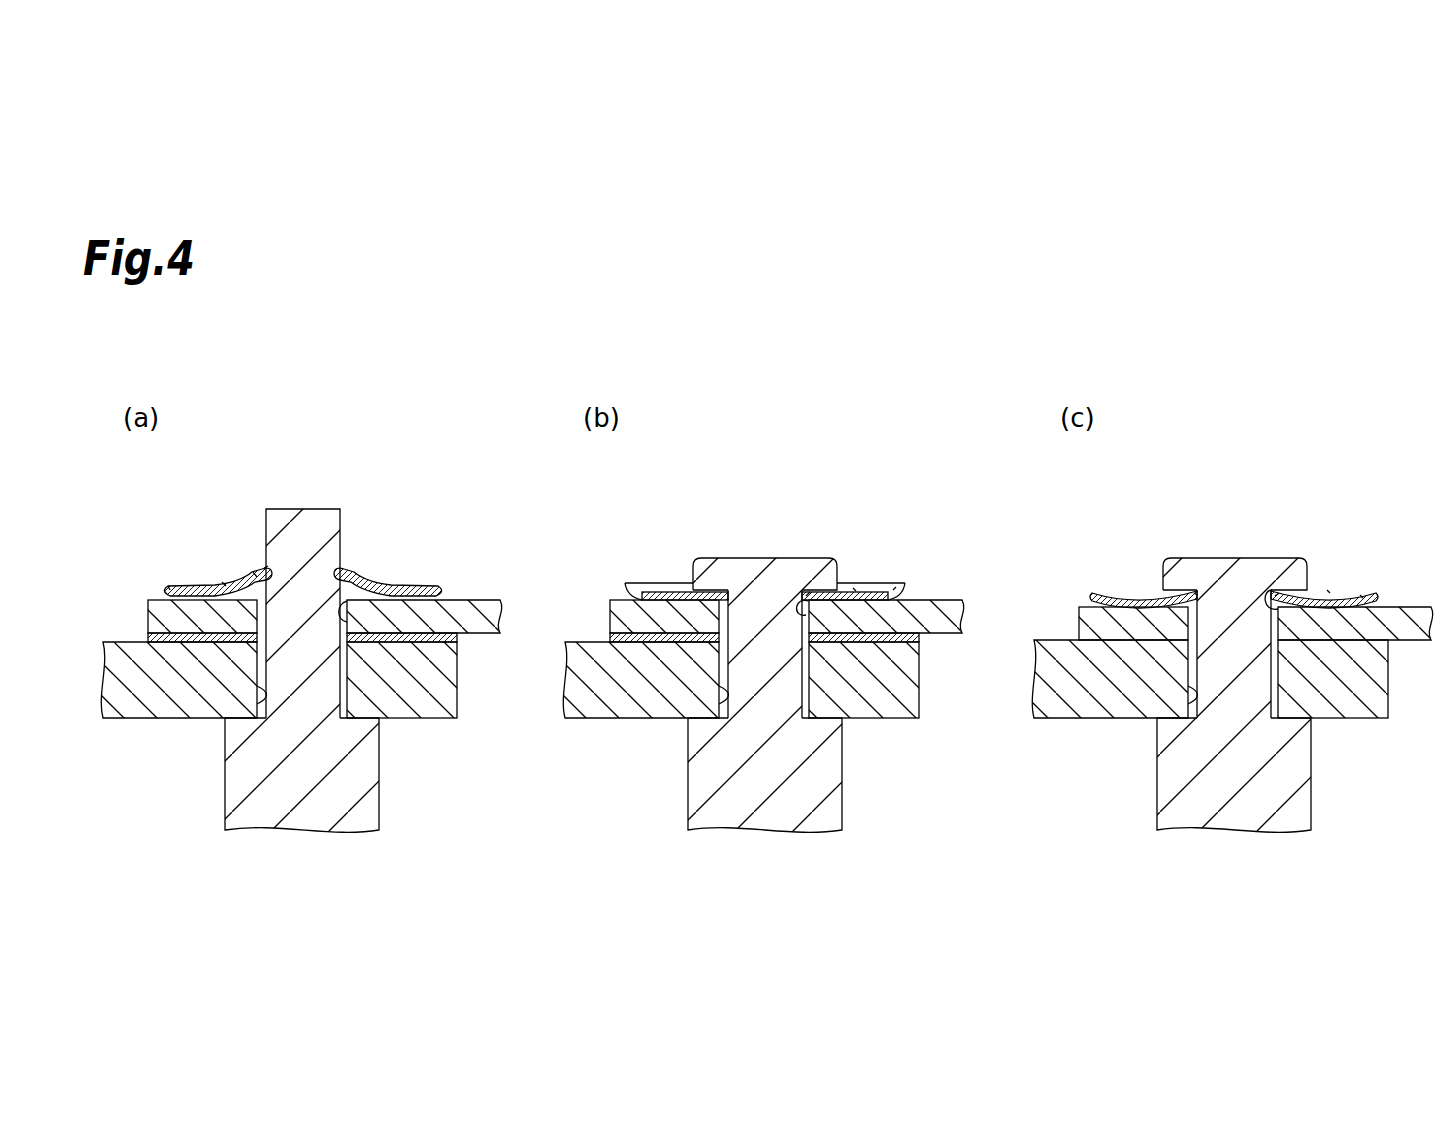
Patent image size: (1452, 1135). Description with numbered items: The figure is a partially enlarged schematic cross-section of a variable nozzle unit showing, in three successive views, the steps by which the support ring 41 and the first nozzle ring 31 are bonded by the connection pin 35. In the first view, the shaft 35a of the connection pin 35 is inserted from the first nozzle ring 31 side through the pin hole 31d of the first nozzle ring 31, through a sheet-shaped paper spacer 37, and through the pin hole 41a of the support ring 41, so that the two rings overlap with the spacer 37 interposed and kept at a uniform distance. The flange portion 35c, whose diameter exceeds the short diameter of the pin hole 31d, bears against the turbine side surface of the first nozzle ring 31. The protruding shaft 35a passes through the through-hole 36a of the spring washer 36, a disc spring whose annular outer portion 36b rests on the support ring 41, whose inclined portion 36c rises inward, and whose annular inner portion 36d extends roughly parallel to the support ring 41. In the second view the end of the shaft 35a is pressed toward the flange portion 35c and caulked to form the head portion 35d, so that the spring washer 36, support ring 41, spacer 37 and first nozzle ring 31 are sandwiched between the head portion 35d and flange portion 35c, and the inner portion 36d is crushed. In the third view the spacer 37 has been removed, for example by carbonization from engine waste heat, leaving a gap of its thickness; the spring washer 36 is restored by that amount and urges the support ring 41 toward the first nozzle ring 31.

The first nozzle ring 31 is at (140, 722).
The pin hole 31d is at (266, 702).
The connection pin 35 is at (223, 805).
The shaft 35a is at (327, 672).
The flange portion 35c is at (365, 772).
The head portion 35d is at (758, 580).
The spring washer 36 is at (388, 580).
The through-hole 36a is at (255, 573).
The outer portion 36b is at (170, 587).
The inclined portion 36c is at (223, 582).
The inner portion 36d is at (266, 566).
The spacer 37 is at (425, 638).
The support ring 41 is at (462, 598).
The pin hole 41a is at (343, 612).